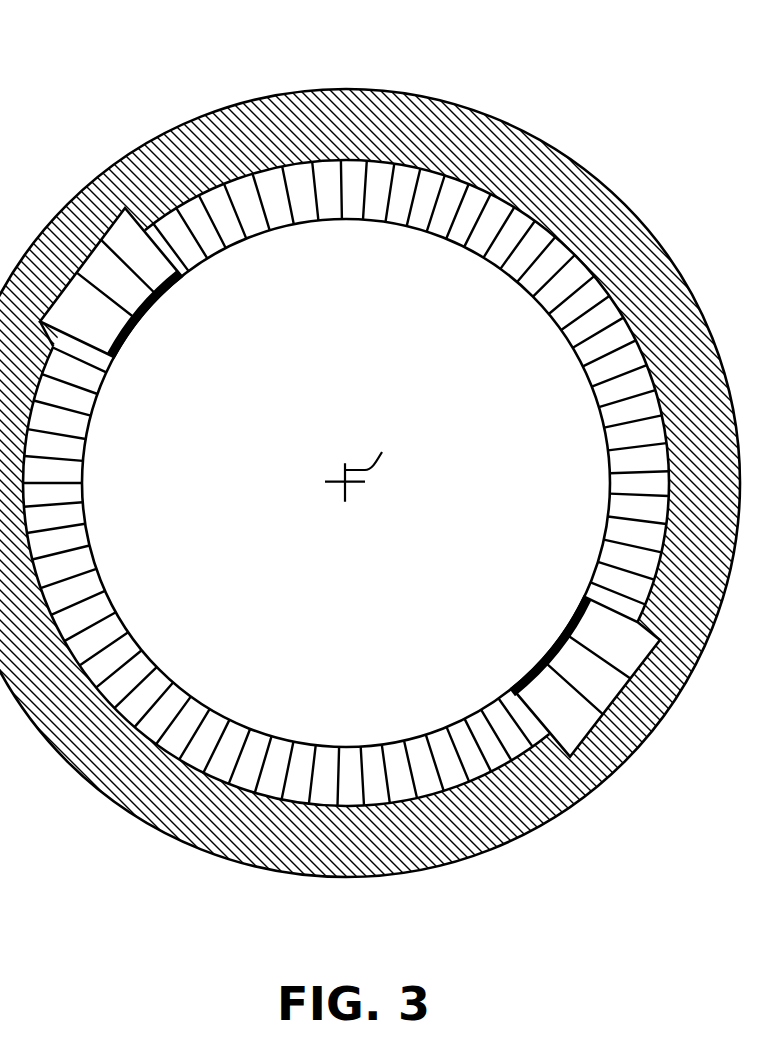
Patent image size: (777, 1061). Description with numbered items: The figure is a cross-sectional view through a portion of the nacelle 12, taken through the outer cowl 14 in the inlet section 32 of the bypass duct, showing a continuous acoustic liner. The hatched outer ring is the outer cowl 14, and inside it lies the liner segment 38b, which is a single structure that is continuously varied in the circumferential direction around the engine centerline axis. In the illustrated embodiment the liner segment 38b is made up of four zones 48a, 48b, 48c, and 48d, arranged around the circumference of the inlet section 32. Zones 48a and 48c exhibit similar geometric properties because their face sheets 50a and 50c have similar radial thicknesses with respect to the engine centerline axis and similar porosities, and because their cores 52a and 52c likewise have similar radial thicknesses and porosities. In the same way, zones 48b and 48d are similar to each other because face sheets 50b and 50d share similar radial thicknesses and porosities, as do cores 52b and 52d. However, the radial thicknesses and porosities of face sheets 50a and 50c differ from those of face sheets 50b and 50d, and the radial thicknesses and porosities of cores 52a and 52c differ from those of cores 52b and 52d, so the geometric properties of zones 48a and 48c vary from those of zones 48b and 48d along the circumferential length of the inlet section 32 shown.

The nacelle 12 is at (568, 119).
The outer cowl 14 is at (222, 135).
The inlet section 32 is at (190, 647).
The liner segment 38b is at (622, 291).
The zone 48a is at (360, 238).
The zone 48b is at (158, 336).
The zone 48c is at (300, 724).
The zone 48d is at (542, 628).
The face sheet 50a is at (437, 238).
The face sheet 50b is at (104, 342).
The face sheet 50c is at (200, 694).
The face sheet 50d is at (576, 614).
The core 52a is at (516, 258).
The core 52b is at (120, 277).
The core 52c is at (394, 762).
The core 52d is at (568, 684).